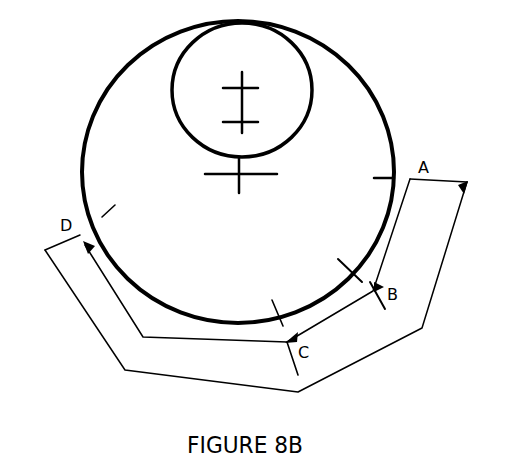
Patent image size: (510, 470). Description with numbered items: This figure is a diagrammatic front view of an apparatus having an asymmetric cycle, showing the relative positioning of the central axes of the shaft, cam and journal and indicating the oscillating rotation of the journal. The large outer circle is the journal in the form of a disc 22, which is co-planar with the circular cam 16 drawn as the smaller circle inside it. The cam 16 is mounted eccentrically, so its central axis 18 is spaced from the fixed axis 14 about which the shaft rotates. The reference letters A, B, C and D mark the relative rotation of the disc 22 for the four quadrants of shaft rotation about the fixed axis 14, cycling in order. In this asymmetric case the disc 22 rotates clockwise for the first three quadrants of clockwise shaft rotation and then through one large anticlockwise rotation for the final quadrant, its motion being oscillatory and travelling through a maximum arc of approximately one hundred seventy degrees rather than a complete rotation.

The fixed axis 14 is at (246, 122).
The circular cam 16 is at (237, 60).
The central axis 18 is at (247, 89).
The disc 22 is at (373, 152).